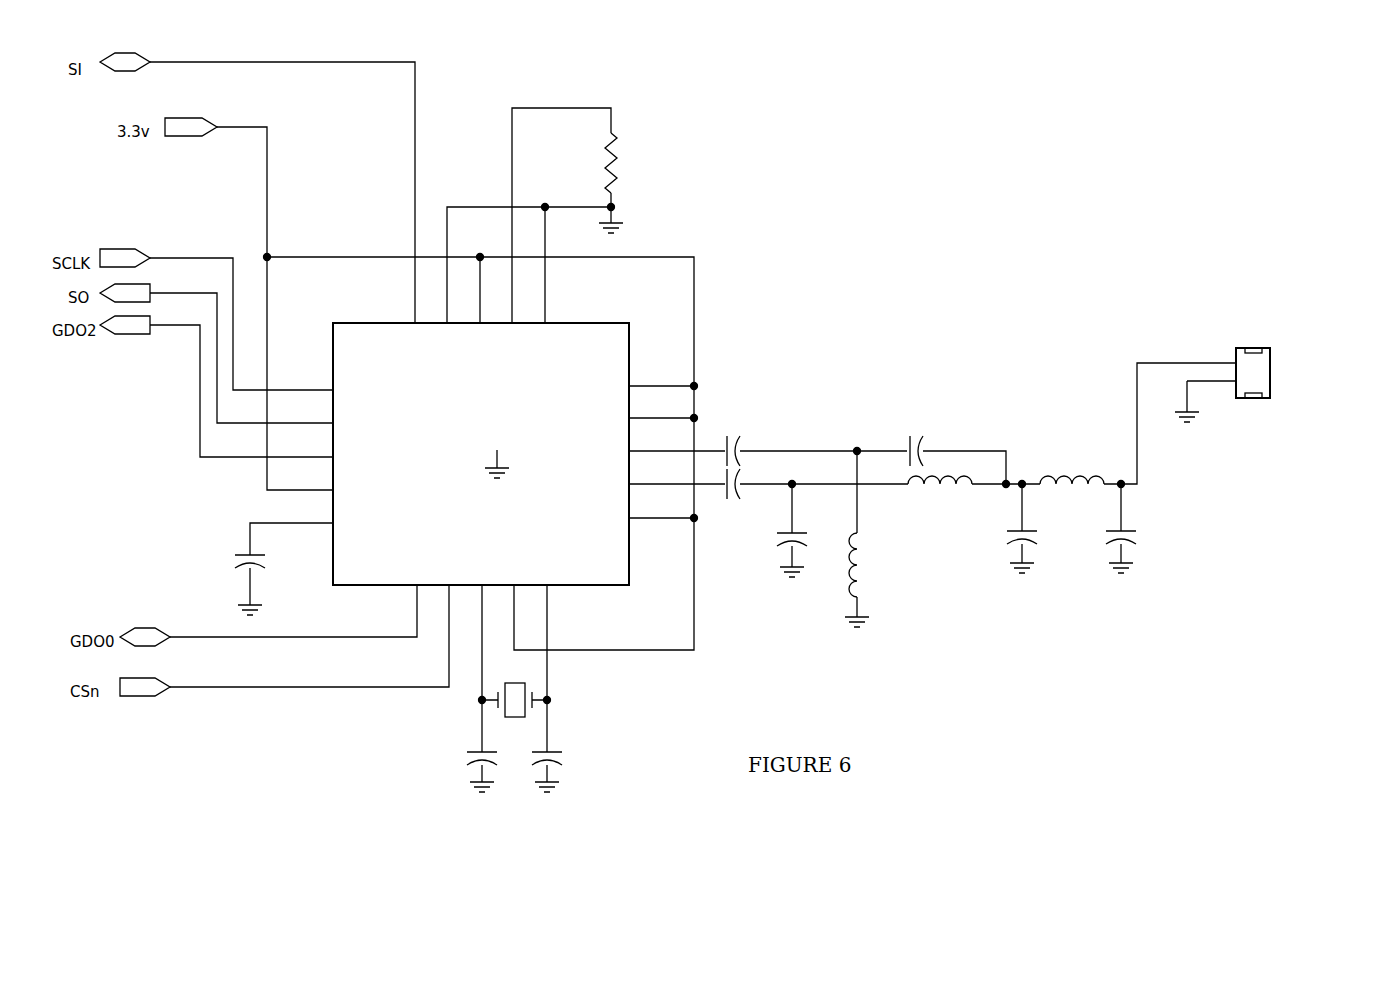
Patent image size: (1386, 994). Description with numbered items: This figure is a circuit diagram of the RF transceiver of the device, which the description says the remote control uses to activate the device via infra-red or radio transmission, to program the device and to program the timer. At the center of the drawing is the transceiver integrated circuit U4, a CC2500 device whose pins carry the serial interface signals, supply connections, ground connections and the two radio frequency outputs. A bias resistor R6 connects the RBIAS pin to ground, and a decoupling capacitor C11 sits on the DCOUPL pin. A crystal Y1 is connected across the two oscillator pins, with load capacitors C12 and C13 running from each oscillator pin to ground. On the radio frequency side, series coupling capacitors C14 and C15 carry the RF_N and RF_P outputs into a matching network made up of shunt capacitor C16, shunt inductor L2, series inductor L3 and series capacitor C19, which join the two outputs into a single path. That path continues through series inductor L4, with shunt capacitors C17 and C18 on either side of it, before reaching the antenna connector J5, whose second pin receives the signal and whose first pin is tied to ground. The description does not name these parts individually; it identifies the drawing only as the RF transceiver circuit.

The CC2500 transceiver IC U4 is at (487, 454).
The 56 kOhm bias resistor R6 is at (614, 215).
The 100nF decoupling capacitor C11 is at (284, 569).
The 27pF crystal load capacitor C12 is at (457, 746).
The 27pF crystal load capacitor C13 is at (574, 746).
The 100pF coupling capacitor C14 is at (749, 433).
The 100pF coupling capacitor C15 is at (749, 501).
The 1pF capacitor C16 is at (808, 530).
The 1.8pF capacitor C17 is at (1052, 528).
The 1.5pF capacitor C18 is at (1150, 528).
The 1pF capacitor C19 is at (923, 432).
The 1.2nH inductor L2 is at (882, 539).
The 1.2nH inductor L3 is at (940, 504).
The 1.2nH inductor L4 is at (1072, 456).
The 26 MHz crystal Y1 is at (515, 661).
The antenna connector 142-4701-201 J5 is at (1280, 384).